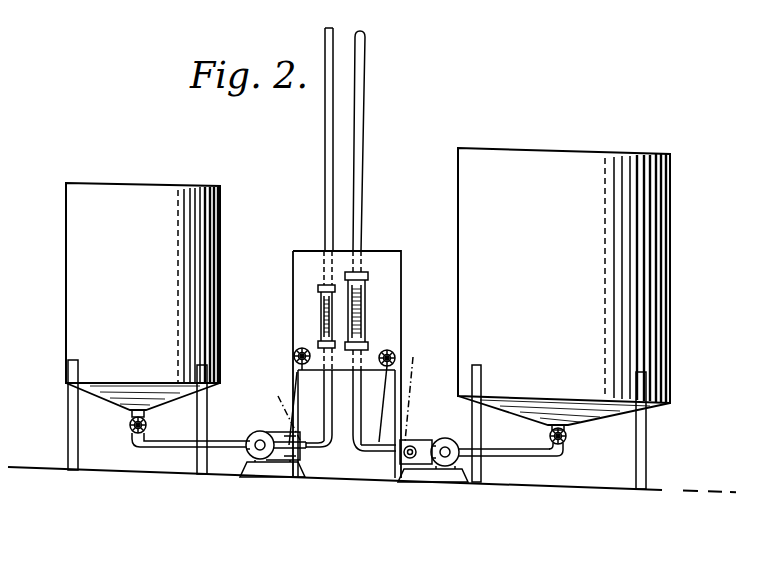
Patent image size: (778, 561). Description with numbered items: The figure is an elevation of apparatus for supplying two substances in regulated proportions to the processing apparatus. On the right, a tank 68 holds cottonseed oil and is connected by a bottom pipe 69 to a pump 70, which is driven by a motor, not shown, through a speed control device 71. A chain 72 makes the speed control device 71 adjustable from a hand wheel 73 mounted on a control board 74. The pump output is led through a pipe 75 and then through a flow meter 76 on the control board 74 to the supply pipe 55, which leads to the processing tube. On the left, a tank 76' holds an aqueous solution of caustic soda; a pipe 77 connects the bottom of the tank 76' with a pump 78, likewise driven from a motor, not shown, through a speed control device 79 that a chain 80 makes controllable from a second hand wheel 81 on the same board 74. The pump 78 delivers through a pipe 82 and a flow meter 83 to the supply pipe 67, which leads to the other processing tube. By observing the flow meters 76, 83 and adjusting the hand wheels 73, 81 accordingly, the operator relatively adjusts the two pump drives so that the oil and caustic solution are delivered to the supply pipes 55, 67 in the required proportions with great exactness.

The supply pipe 55 is at (362, 156).
The supply pipe 67 is at (324, 158).
The tank 68 is at (545, 152).
The bottom pipe 69 is at (522, 458).
The pump 70 is at (450, 464).
The speed control device 71 is at (426, 440).
The chain 72 is at (420, 389).
The hand wheel 73 is at (391, 351).
The control board 74 is at (398, 252).
The pipe 75 is at (373, 452).
The flow meter 76 is at (392, 302).
The tank 76' is at (143, 311).
The pipe 77 is at (176, 452).
The pump 78 is at (268, 464).
The speed control device 79 is at (272, 420).
The chain 80 is at (276, 408).
The hand wheel 81 is at (296, 351).
The pipe 82 is at (326, 430).
The flow meter 83 is at (320, 300).